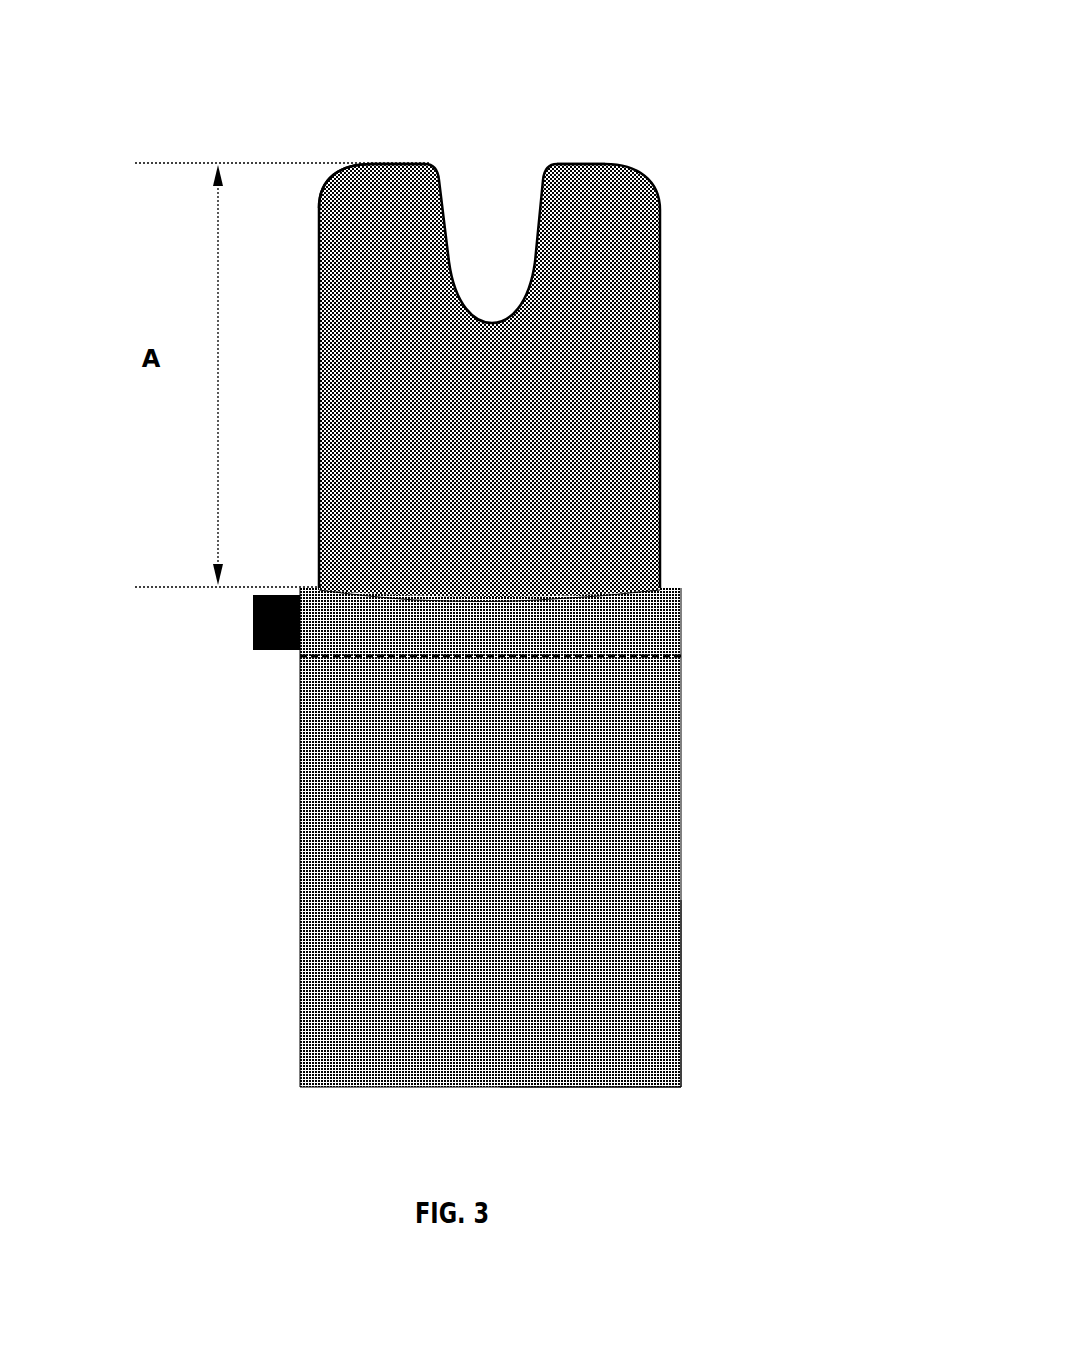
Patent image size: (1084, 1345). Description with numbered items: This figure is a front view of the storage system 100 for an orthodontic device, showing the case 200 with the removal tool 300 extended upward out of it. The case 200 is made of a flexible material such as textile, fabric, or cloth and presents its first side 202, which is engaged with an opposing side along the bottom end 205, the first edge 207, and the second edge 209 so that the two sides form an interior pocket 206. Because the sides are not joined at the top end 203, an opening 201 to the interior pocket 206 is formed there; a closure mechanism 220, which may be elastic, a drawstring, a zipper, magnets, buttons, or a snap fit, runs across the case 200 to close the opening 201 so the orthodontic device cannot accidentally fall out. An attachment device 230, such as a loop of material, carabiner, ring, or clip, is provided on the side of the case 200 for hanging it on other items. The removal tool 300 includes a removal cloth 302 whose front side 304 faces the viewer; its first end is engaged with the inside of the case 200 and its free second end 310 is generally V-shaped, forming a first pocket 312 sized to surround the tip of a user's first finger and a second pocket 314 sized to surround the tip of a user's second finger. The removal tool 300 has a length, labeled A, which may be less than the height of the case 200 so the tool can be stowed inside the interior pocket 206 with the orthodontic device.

The storage system 100 is at (171, 647).
The case 200 is at (254, 790).
The opening 201 is at (537, 600).
The first side 202 is at (585, 958).
The top end 203 is at (415, 595).
The bottom end 205 is at (375, 1086).
The interior pocket 206 is at (520, 601).
The first edge 207 is at (297, 930).
The second edge 209 is at (683, 1043).
The closure mechanism 220 is at (583, 623).
The attachment device 230 is at (258, 641).
The removal tool 300 is at (672, 280).
The removal cloth 302 is at (353, 410).
The front side 304 is at (618, 428).
The second end 310 is at (388, 163).
The first pocket 312 is at (360, 163).
The second pocket 314 is at (587, 163).